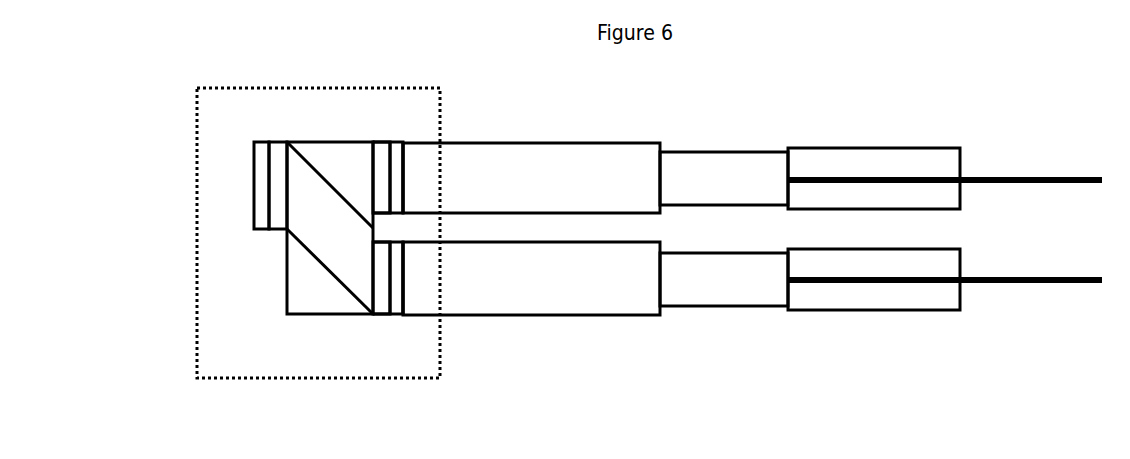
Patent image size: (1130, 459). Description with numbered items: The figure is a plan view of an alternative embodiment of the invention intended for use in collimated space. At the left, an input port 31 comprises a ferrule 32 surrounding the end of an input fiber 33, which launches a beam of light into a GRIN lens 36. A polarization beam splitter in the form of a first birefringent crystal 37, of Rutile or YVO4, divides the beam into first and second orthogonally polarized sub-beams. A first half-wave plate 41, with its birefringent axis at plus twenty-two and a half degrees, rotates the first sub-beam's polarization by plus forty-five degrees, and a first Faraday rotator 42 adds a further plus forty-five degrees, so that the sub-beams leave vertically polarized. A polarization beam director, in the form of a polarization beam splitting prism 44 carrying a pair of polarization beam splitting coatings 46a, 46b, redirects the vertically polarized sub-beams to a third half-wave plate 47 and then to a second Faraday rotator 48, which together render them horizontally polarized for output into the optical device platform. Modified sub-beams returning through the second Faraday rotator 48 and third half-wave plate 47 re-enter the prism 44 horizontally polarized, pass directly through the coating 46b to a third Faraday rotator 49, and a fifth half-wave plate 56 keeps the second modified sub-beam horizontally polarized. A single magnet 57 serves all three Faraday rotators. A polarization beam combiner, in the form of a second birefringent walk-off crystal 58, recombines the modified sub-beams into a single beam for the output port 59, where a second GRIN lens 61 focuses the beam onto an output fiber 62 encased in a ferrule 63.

The input port 31 is at (752, 327).
The ferrule 32 is at (896, 303).
The input fiber 33 is at (1028, 287).
The GRIN lens 36 is at (695, 287).
The first birefringent crystal 37 is at (545, 303).
The first half-wave plate 41 is at (395, 303).
The first Faraday rotator 42 is at (377, 303).
The polarization beam splitting prism 44 is at (312, 302).
The polarization beam splitting coating 46a is at (312, 255).
The polarization beam splitting coating 46b is at (313, 163).
The third half-wave plate 47 is at (277, 146).
The second Faraday rotator 48 is at (259, 147).
The third Faraday rotator 49 is at (375, 148).
The fifth half-wave plate 56 is at (403, 143).
The single magnet 57 is at (212, 185).
The second birefringent walk-off crystal 58 is at (614, 152).
The output port 59 is at (752, 126).
The second GRIN lens 61 is at (730, 150).
The output fiber 62 is at (1012, 170).
The ferrule 63 is at (828, 153).